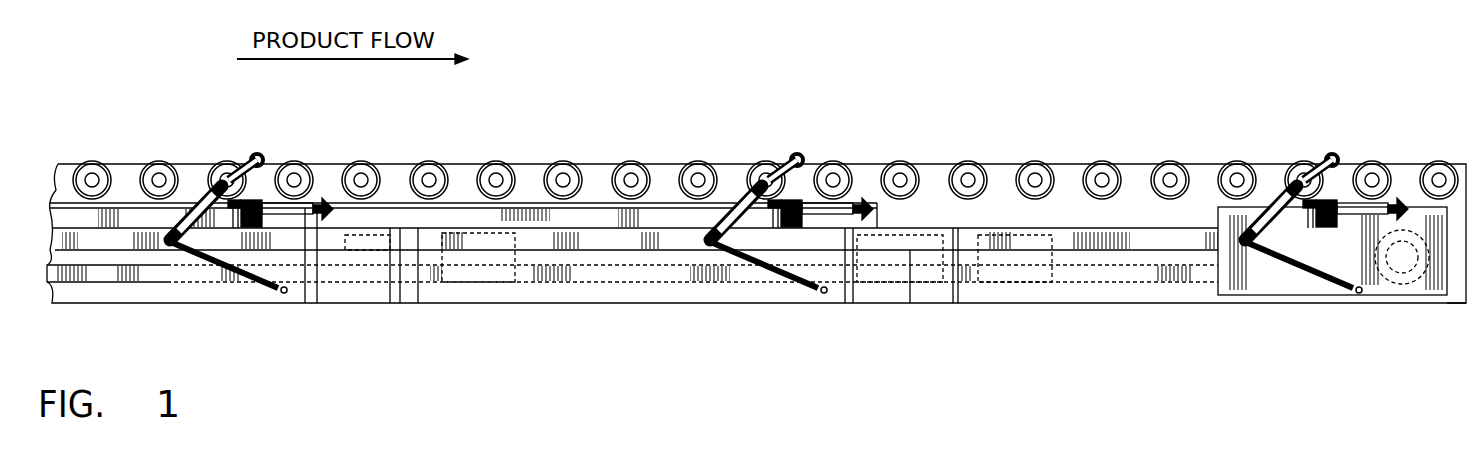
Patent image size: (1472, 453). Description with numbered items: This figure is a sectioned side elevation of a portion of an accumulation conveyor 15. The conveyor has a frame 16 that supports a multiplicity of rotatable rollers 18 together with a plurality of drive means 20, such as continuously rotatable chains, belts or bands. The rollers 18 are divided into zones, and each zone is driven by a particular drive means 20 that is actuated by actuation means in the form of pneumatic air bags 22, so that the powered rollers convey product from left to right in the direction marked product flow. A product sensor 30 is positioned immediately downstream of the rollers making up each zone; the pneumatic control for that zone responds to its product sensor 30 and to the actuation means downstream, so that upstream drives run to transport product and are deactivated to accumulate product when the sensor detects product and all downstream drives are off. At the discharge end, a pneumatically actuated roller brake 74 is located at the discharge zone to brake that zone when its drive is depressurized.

The accumulation conveyor 15 is at (657, 165).
The frame 16 is at (915, 302).
The rollers 18 is at (362, 163).
The drive means 20 is at (126, 203).
The pneumatic air bags 22 is at (478, 257).
The product sensor 30 is at (254, 157).
The roller brake 74 is at (1243, 296).